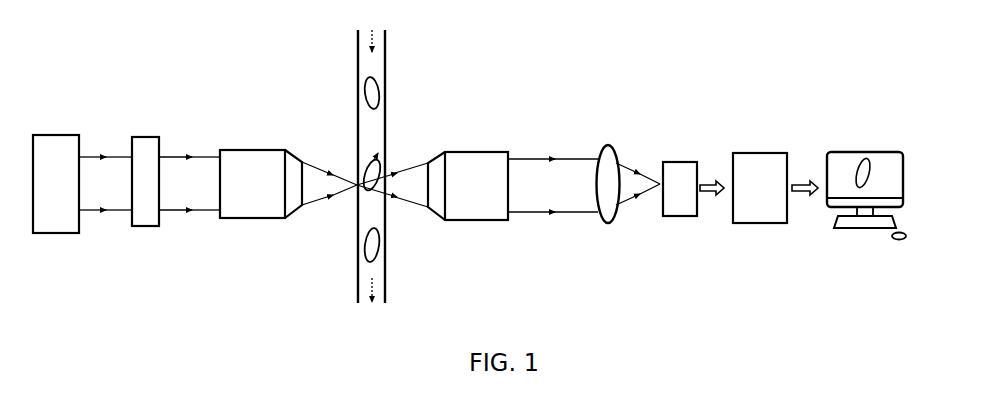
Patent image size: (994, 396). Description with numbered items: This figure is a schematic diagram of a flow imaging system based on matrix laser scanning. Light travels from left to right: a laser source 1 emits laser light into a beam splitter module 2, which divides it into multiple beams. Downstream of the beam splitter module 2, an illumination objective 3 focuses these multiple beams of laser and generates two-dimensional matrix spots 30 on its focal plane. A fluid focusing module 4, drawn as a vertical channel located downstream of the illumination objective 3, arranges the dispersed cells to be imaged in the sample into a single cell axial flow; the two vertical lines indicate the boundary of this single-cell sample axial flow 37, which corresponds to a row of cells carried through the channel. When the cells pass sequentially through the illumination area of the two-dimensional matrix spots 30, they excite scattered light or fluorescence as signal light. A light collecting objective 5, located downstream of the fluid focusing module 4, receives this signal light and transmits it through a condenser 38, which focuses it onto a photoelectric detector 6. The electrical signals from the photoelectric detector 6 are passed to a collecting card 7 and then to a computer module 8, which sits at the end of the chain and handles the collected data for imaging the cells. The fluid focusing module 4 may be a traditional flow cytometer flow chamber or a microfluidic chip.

The laser source 1 is at (52, 134).
The beam splitter module 2 is at (145, 137).
The illumination objective 3 is at (252, 150).
The fluid focusing module 4 is at (390, 108).
The light collecting objective 5 is at (485, 152).
The photoelectric detector 6 is at (675, 152).
The collecting card 7 is at (760, 153).
The computer module 8 is at (866, 152).
The two-dimensional matrix spots 30 is at (352, 217).
The single-cell sample axial flow 37 is at (386, 248).
The condenser 38 is at (610, 222).